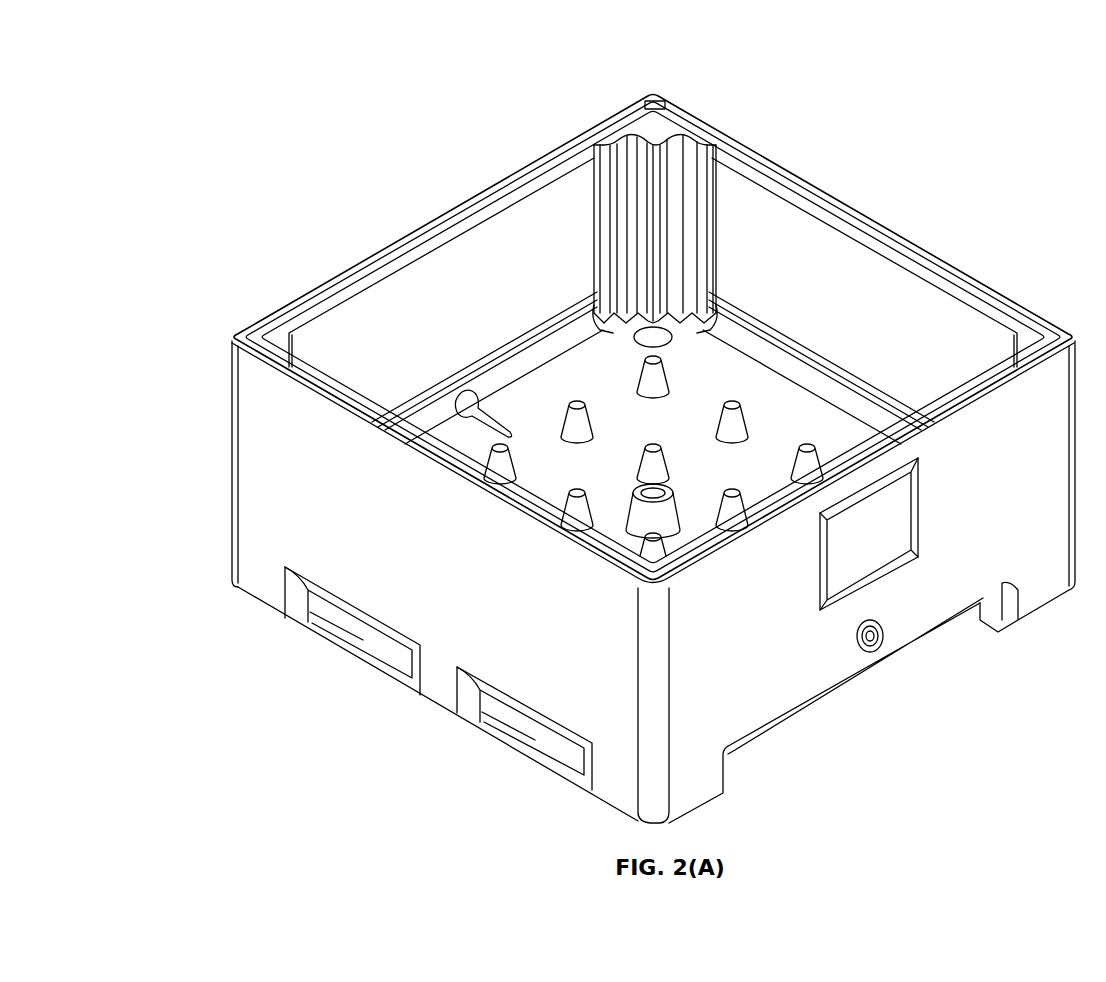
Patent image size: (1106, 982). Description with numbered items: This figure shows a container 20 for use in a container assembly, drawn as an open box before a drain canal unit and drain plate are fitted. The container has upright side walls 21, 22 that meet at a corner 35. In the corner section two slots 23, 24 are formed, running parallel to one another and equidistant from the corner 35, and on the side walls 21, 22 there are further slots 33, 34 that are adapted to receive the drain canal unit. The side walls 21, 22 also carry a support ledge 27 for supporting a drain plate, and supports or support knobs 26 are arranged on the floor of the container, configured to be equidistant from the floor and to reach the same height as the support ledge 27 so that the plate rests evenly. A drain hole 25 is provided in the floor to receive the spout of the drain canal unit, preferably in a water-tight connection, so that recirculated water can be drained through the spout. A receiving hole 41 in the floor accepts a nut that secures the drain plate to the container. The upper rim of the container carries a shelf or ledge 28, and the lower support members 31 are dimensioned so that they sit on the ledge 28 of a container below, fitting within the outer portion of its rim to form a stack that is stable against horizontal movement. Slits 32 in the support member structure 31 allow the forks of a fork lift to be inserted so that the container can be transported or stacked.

The container 20 is at (805, 151).
The side wall 21 is at (856, 258).
The side wall 22 is at (392, 290).
The slot 23 is at (597, 147).
The slot 24 is at (675, 140).
The drain hole 25 is at (662, 344).
The support knob 26 is at (738, 412).
The support ledge 27 is at (546, 343).
The ledge 28 is at (973, 300).
The support member 31 is at (700, 790).
The slit 32 is at (365, 640).
The slot 33 is at (712, 145).
The slot 34 is at (594, 147).
The corner 35 is at (645, 118).
The receiving hole 41 is at (660, 492).